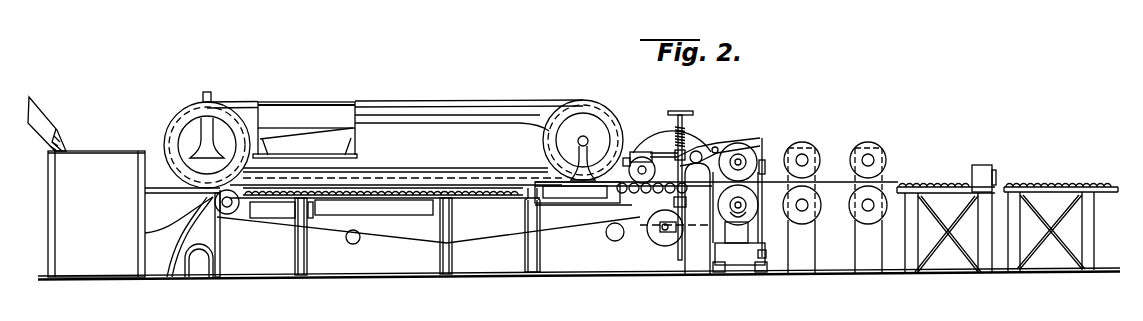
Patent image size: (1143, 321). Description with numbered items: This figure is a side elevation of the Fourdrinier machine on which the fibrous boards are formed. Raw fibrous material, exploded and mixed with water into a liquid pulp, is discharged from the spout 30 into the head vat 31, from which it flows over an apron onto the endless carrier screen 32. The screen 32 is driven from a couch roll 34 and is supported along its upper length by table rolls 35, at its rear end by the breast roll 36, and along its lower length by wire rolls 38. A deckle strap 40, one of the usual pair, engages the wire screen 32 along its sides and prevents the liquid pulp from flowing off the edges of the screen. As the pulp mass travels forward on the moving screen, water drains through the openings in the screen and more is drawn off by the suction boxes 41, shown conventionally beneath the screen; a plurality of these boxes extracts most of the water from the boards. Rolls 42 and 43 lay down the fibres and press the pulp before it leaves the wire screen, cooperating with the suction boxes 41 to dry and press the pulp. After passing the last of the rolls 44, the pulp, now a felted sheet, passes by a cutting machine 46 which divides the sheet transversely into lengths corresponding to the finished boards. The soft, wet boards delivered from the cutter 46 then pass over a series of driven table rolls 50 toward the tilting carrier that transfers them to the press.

The spout 30 is at (42, 121).
The head vat 31 is at (96, 214).
The endless carrier screen 32 is at (423, 244).
The couch roll 34 is at (753, 208).
The table rolls 35 is at (513, 193).
The breast roll 36 is at (232, 213).
The wire rolls 38 is at (352, 244).
The deckle strap 40 is at (484, 109).
The suction boxes 41 is at (406, 207).
The roll 42 is at (656, 141).
The roll 43 is at (717, 141).
The rolls 44 is at (846, 151).
The cutting machine 46 is at (994, 166).
The driven table rolls 50 is at (1070, 181).